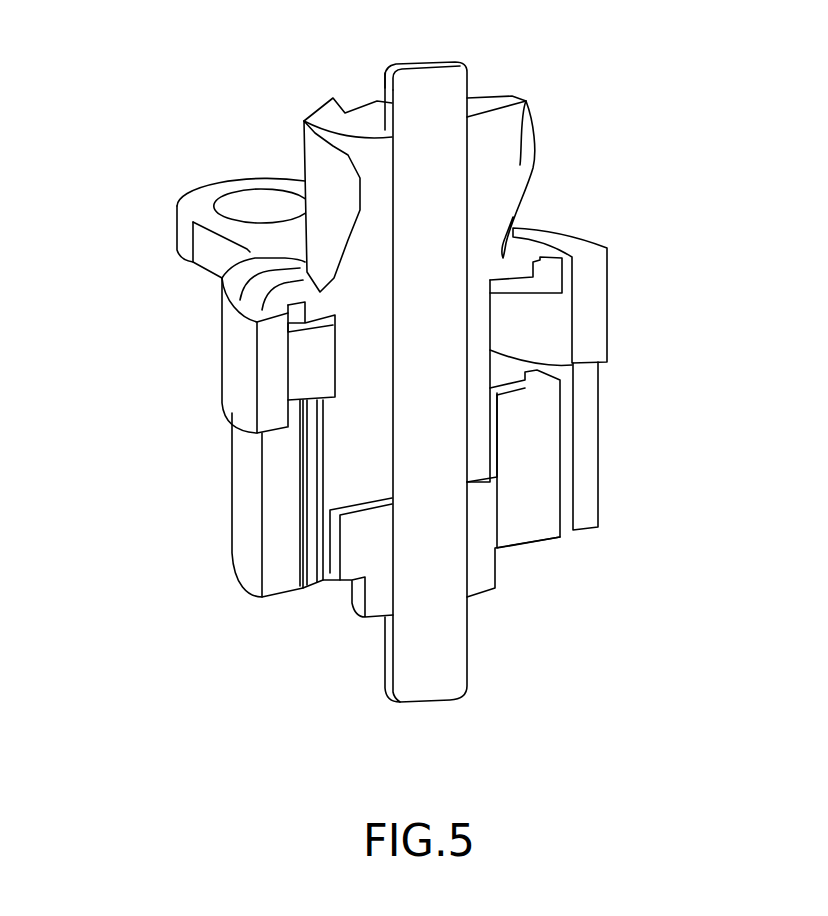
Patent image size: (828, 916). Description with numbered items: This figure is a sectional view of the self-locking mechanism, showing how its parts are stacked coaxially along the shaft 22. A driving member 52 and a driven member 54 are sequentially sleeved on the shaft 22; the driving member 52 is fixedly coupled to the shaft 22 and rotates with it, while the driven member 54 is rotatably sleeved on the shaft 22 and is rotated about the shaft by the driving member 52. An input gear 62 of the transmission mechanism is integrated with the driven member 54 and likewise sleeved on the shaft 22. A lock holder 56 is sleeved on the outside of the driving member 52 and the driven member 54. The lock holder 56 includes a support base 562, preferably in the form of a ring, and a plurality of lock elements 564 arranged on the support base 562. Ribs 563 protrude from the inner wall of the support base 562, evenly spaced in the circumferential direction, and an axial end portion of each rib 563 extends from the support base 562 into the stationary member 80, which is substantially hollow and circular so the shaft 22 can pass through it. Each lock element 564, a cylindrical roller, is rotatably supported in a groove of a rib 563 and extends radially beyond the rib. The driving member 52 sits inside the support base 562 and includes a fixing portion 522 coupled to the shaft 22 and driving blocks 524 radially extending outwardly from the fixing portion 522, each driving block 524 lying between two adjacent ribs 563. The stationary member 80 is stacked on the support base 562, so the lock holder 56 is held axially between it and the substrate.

The shaft 22 is at (408, 112).
The input gear 62 is at (520, 165).
The stationary member 80 is at (552, 240).
The driven member 54 is at (480, 348).
The driving member 52 is at (498, 667).
The fixing portion 522 is at (482, 522).
The driving blocks 524 is at (530, 450).
The lock holder 56 is at (68, 552).
The support base 562 is at (248, 560).
The ribs 563 is at (320, 578).
The lock elements 564 is at (300, 381).